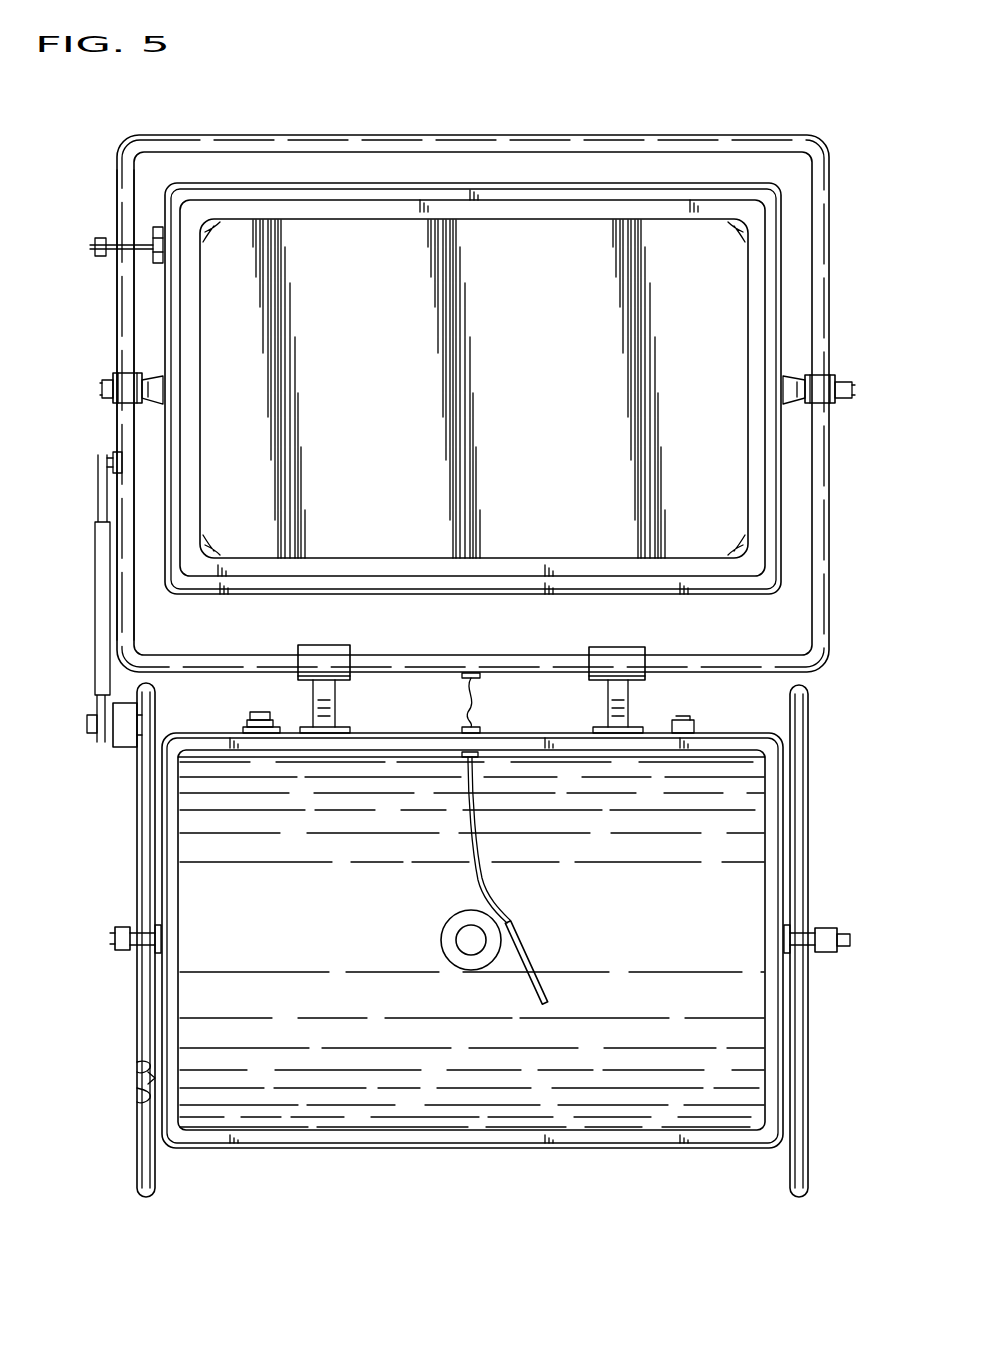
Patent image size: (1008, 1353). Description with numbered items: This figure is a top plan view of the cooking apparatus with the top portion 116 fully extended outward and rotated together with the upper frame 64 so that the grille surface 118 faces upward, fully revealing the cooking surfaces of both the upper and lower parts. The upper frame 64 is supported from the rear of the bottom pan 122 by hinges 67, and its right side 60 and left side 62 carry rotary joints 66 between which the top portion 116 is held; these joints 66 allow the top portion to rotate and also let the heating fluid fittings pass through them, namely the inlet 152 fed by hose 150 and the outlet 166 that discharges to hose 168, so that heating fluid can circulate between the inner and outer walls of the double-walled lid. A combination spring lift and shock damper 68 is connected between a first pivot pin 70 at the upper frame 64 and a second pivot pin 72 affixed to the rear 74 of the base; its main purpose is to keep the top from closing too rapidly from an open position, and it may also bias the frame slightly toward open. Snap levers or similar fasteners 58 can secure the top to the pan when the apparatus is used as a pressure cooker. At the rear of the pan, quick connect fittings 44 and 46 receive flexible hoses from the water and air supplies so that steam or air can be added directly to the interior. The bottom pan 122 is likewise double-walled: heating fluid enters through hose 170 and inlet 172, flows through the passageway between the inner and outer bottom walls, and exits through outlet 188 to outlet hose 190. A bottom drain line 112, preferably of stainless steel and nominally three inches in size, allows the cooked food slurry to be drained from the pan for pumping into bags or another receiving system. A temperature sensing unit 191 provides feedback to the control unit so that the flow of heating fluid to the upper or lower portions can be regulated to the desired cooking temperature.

The quick connect type fitting 44 is at (258, 720).
The quick connect type fitting 46 is at (688, 720).
The snap levers or similar fasteners 58 is at (121, 236).
The right side of upper frame 60 is at (822, 510).
The left side of upper frame 62 is at (127, 292).
The upper frame 64 is at (487, 140).
The rotary joint 66 is at (125, 385).
The hinges 67 is at (318, 647).
The spring lift/shock damper 68 is at (96, 566).
The first pivot pin 70 is at (110, 463).
The second pivot pin 72 is at (95, 726).
The rear of base 74 is at (803, 741).
The bottom drain line 112 is at (458, 940).
The top portion 116 is at (583, 192).
The grille surface 118 is at (549, 420).
The bottom pan 122 is at (486, 1150).
The hose 150 is at (100, 390).
The inlet 152 is at (152, 404).
The outlet 166 is at (795, 404).
The hose 168 is at (846, 390).
The hose 170 is at (116, 941).
The inlet 172 is at (132, 927).
The outlet 188 is at (812, 937).
The outlet hose 190 is at (851, 945).
The temperature sensing unit 191 is at (522, 942).